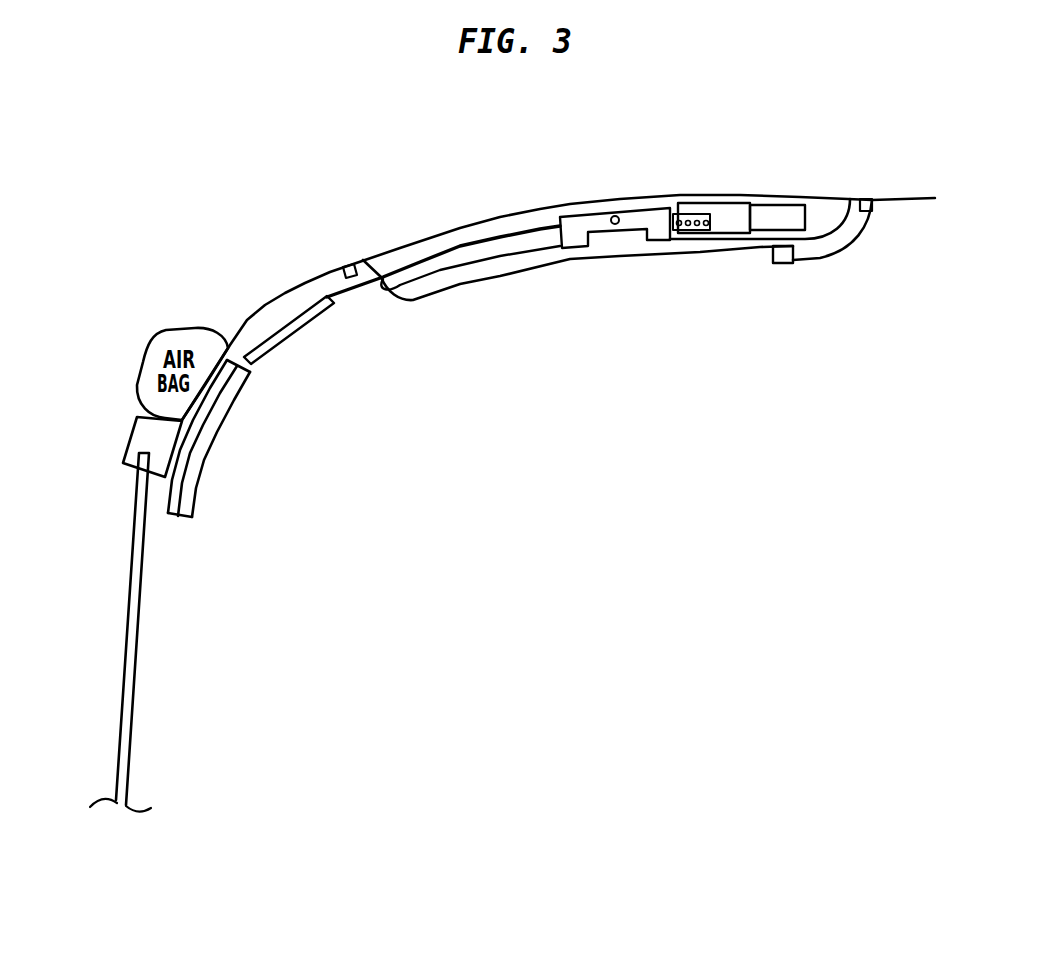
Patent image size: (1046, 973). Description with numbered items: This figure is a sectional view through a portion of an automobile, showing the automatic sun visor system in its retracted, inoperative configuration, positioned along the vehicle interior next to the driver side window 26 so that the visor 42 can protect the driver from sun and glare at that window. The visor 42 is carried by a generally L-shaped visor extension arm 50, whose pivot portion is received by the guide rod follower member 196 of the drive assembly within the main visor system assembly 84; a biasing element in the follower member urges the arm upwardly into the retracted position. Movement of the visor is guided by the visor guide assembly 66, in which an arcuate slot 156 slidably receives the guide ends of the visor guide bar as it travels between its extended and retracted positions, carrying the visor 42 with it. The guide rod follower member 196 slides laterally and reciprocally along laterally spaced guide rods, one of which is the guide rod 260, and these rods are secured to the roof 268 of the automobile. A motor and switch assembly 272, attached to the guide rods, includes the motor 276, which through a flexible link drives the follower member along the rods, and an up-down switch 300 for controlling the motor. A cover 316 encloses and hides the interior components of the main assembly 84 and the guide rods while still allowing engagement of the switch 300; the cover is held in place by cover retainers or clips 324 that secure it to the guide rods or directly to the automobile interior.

The side window 26 is at (125, 671).
The visor 42 is at (239, 332).
The visor extension arm 50 is at (354, 290).
The visor guide assembly 66 is at (200, 487).
The main visor system assembly 84 is at (652, 287).
The arcuate slot 156 is at (180, 519).
The guide rod follower member 196 is at (576, 228).
The guide rod 260 is at (494, 238).
The roof 268 is at (903, 201).
The motor and switch assembly 272 is at (810, 265).
The motor 276 is at (732, 203).
The switch 300 is at (782, 264).
The cover 316 is at (723, 252).
The clips 324 is at (347, 266).